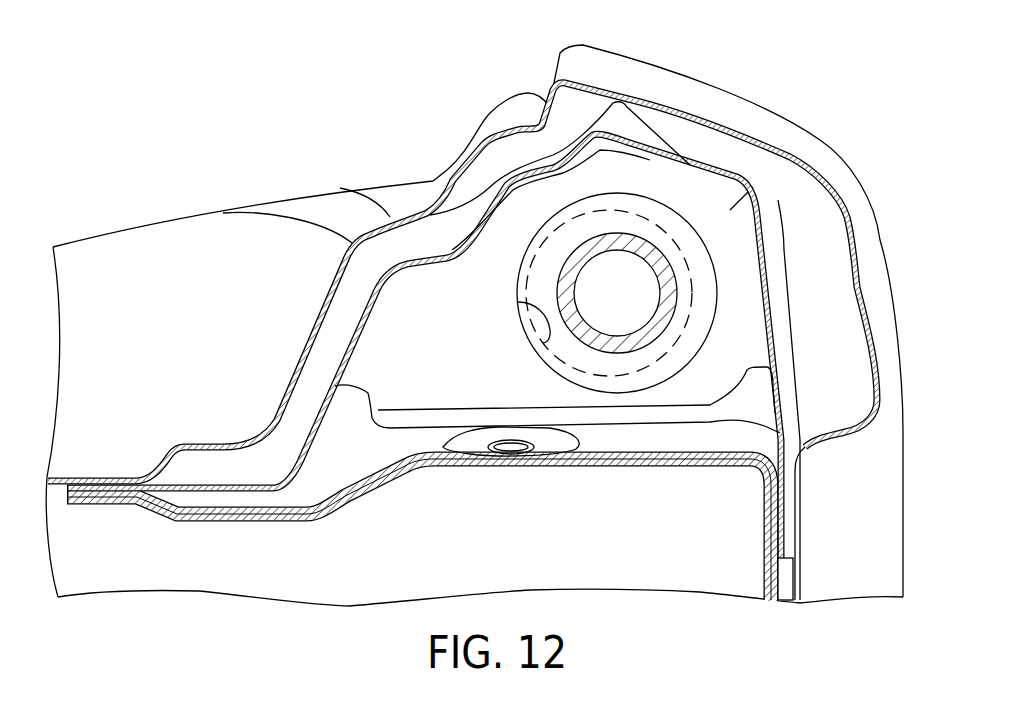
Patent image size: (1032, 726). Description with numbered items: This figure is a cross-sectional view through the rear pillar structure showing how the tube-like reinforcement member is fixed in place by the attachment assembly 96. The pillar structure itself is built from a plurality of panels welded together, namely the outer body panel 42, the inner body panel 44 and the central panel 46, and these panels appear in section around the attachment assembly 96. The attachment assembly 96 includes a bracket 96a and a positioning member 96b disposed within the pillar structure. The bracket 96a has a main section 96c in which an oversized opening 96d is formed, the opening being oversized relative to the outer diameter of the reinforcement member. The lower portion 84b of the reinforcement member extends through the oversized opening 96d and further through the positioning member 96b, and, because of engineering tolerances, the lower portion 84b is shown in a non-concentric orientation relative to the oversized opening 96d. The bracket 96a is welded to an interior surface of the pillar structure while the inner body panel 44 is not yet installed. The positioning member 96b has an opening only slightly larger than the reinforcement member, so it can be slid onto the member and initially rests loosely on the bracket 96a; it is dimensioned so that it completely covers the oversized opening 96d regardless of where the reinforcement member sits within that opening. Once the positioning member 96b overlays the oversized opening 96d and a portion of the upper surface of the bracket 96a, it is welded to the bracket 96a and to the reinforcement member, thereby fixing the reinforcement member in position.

The lower portion 84b is at (643, 247).
The attachment assembly 96 is at (708, 162).
The bracket 96a is at (748, 343).
The positioning member 96b is at (706, 284).
The main section 96c is at (778, 200).
The oversized opening 96d is at (518, 302).
The central panel 46 is at (828, 186).
The outer body panel 42 is at (860, 240).
The inner body panel 44 is at (637, 477).